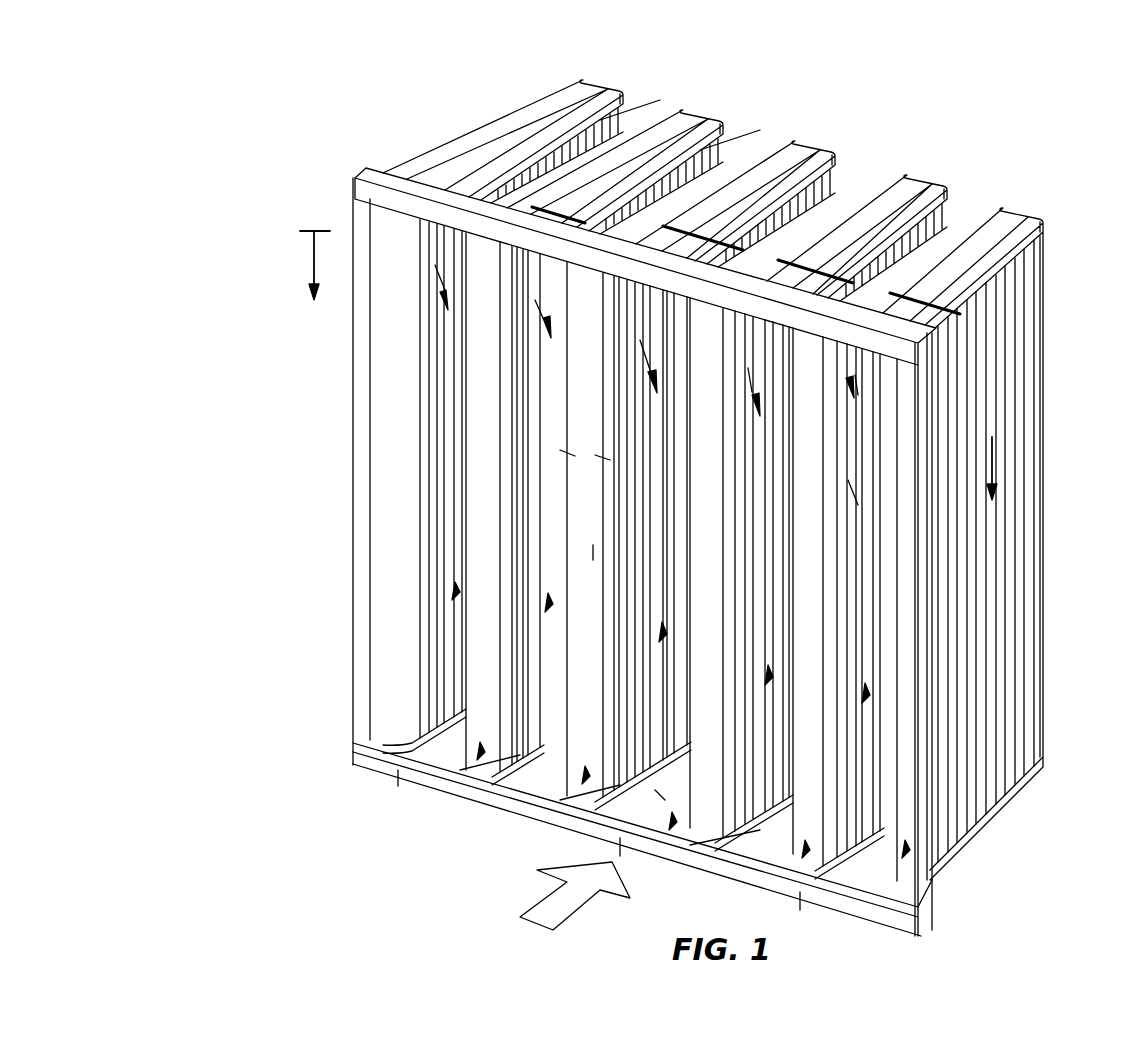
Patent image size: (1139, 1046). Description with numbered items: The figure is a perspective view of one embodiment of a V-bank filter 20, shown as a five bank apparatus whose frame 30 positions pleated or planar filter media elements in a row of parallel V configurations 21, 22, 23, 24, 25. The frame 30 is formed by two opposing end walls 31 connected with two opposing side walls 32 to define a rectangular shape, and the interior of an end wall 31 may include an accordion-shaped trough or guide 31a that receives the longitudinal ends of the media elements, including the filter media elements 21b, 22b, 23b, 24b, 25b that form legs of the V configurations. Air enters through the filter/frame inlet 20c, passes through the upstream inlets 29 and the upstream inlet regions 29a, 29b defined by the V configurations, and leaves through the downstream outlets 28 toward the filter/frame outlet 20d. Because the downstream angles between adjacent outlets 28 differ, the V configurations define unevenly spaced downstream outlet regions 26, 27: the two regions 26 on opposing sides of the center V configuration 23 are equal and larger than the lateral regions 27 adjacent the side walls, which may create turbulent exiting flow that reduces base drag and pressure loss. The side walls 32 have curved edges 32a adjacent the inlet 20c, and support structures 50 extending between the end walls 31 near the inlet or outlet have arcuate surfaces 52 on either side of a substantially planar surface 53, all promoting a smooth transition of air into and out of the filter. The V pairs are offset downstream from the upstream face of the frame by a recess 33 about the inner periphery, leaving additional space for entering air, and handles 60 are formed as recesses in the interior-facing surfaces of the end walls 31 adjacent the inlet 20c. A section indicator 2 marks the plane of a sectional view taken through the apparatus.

The V-bank filter 20 is at (651, 494).
The filter/frame inlet 20c is at (400, 801).
The filter/frame outlet 20d is at (878, 95).
The V configuration 21 is at (440, 602).
The V configuration 22 is at (526, 507).
The V configuration 23 is at (645, 535).
The V configuration 24 is at (756, 573).
The V configuration 25 is at (851, 601).
The filter media element 21b is at (748, 379).
The filter media element 22b is at (730, 145).
The filter media element 23b is at (842, 172).
The filter media element 24b is at (955, 205).
The filter media element 25b is at (1032, 300).
The downstream outlet region 26 is at (755, 131).
The downstream outlet region 27 is at (659, 101).
The downstream outlet 28 is at (630, 120).
The upstream inlet 29 is at (646, 779).
The upstream inlet region 29a is at (642, 341).
The upstream inlet region 29b is at (652, 371).
The frame 30 is at (614, 557).
The end wall 31 is at (971, 553).
The trough or guide 31a is at (964, 594).
The side wall 32 is at (342, 481).
The curved surface or edge 32a is at (383, 332).
The recess 33 is at (508, 783).
The support structure 50 is at (476, 762).
The curved or arcuate surface 52 is at (560, 450).
The substantially planar surface 53 is at (593, 545).
The handle 60 is at (650, 868).
The section line 2- 2 is at (655, 353).